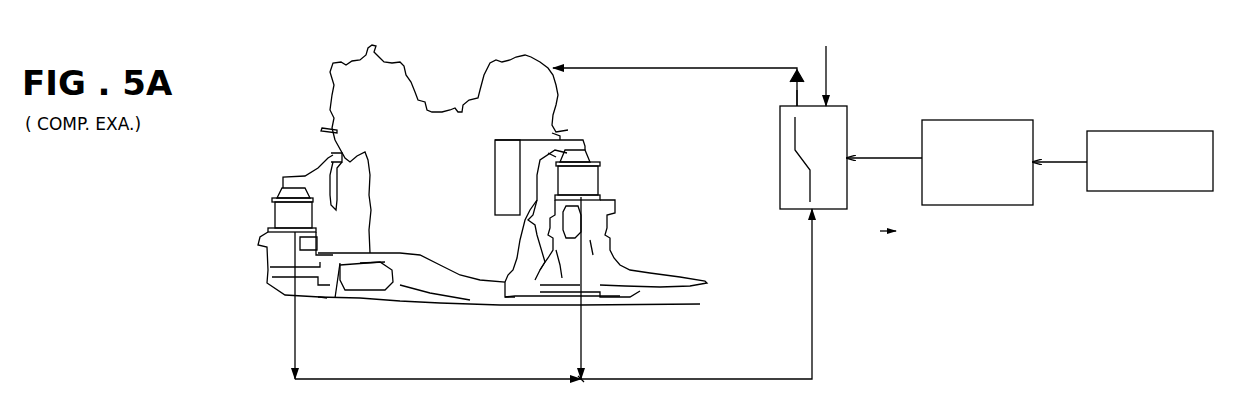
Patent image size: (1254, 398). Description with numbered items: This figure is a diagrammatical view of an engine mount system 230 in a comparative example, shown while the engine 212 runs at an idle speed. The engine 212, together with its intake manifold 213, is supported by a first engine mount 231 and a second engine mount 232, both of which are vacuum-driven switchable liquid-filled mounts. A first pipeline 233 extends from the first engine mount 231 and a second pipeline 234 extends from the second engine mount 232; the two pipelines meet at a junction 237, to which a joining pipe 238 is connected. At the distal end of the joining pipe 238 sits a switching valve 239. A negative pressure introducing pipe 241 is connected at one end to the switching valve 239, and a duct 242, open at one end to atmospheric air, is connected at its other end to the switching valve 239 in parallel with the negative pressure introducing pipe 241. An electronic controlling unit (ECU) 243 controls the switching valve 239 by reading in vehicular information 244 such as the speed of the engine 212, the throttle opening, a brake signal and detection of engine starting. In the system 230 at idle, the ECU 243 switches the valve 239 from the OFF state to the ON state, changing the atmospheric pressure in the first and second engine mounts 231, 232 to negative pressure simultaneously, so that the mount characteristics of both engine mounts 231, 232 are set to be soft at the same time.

The engine 212 is at (424, 78).
The intake manifold 213 is at (405, 248).
The engine mount system 230 is at (292, 74).
The first engine mount 231 is at (289, 208).
The second engine mount 232 is at (585, 172).
The first pipeline 233 is at (398, 379).
The second pipeline 234 is at (581, 322).
The junction 237 is at (586, 378).
The joining pipe 238 is at (695, 379).
The switching valve 239 is at (840, 106).
The negative pressure introducing pipe 241 is at (665, 68).
The duct 242 is at (826, 62).
The electronic controlling unit (ECU) 243 is at (992, 119).
The vehicular information 244 is at (1160, 131).